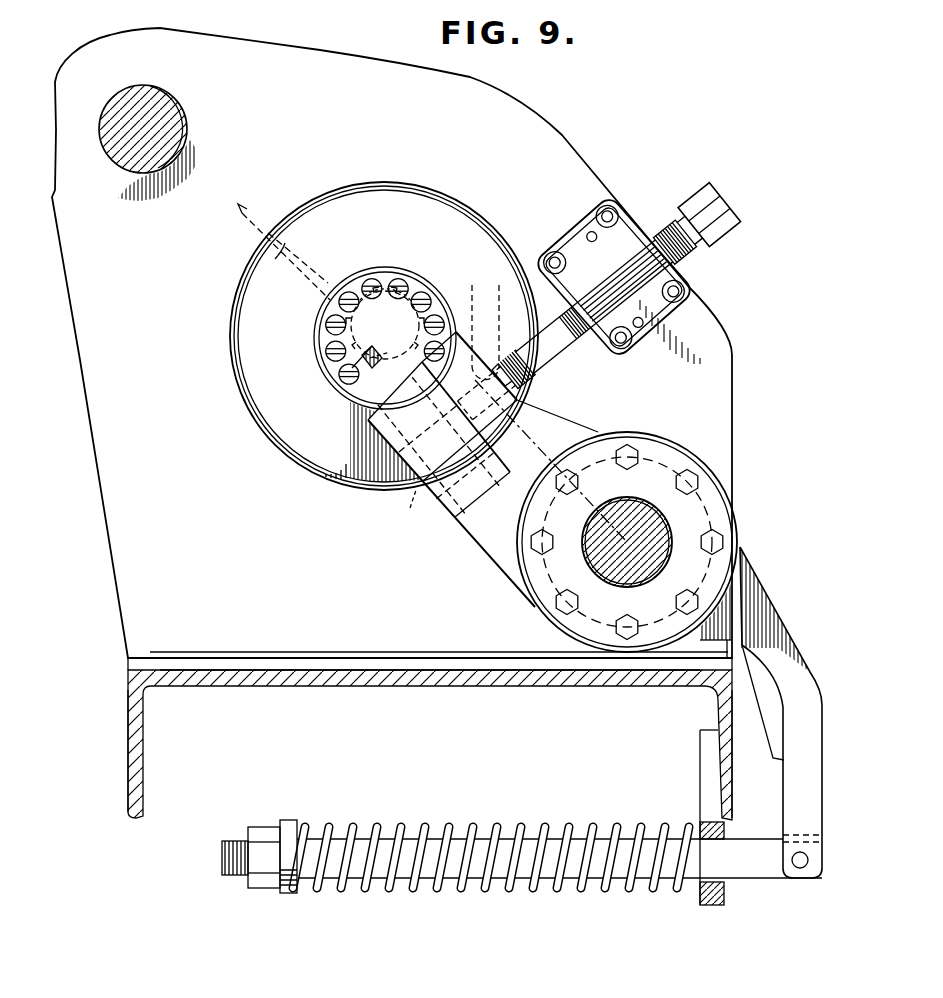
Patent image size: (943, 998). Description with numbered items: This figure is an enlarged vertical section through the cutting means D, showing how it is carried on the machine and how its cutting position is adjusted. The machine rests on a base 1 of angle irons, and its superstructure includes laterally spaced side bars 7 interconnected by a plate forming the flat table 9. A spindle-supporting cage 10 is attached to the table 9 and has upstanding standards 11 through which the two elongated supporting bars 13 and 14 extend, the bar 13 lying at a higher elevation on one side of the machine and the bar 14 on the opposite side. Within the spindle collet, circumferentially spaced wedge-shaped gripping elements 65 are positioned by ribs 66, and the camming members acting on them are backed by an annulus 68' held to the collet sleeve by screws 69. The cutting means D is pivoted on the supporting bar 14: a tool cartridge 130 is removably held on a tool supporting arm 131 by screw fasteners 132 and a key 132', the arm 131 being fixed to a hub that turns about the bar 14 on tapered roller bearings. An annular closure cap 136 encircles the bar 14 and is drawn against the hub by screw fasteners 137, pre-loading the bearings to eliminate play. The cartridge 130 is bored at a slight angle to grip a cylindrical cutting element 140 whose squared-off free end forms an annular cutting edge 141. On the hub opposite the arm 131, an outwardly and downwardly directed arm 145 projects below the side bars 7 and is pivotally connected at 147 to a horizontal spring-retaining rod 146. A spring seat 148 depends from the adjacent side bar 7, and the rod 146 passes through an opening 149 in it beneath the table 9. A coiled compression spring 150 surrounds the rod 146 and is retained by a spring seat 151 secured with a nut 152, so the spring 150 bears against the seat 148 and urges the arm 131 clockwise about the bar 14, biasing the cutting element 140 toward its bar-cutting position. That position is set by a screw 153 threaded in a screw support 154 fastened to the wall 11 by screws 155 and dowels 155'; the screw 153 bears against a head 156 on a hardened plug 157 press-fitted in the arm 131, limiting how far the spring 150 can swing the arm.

The base 1 is at (123, 758).
The side bars 7 is at (144, 734).
The table 9 is at (394, 672).
The spindle-supporting frame or cage 10 is at (365, 53).
The upstanding supports or standards 11 is at (384, 315).
The supporting bar member 13 is at (180, 121).
The supporting bar 14 is at (598, 555).
The gripping elements 65 is at (385, 323).
The ribs 66 is at (416, 366).
The annulus 68' is at (386, 260).
The screws 69 is at (373, 277).
The tool cartridge 130 is at (446, 522).
The tool supporting arm 131 is at (582, 433).
The screw fasteners 132 is at (505, 375).
The key 132' is at (394, 512).
The closure cap 136 is at (627, 542).
The screw fasteners 137 is at (689, 474).
The cutting element 140 is at (360, 405).
The annular cutting edge 141 is at (357, 364).
The arm 145 is at (760, 601).
The spring-retaining rod 146 is at (750, 872).
The pivotal connection 147 is at (802, 870).
The spring seat 148 is at (708, 902).
The opening 149 is at (724, 836).
The coiled compression spring 150 is at (338, 891).
The spring seat 151 is at (288, 894).
The nut 152 is at (256, 888).
The screw 153 is at (660, 203).
The screw support 154 is at (634, 212).
The screws 155 is at (611, 270).
The dowels 155' is at (614, 280).
The head 156 is at (528, 390).
The hardened plug 157 is at (497, 350).